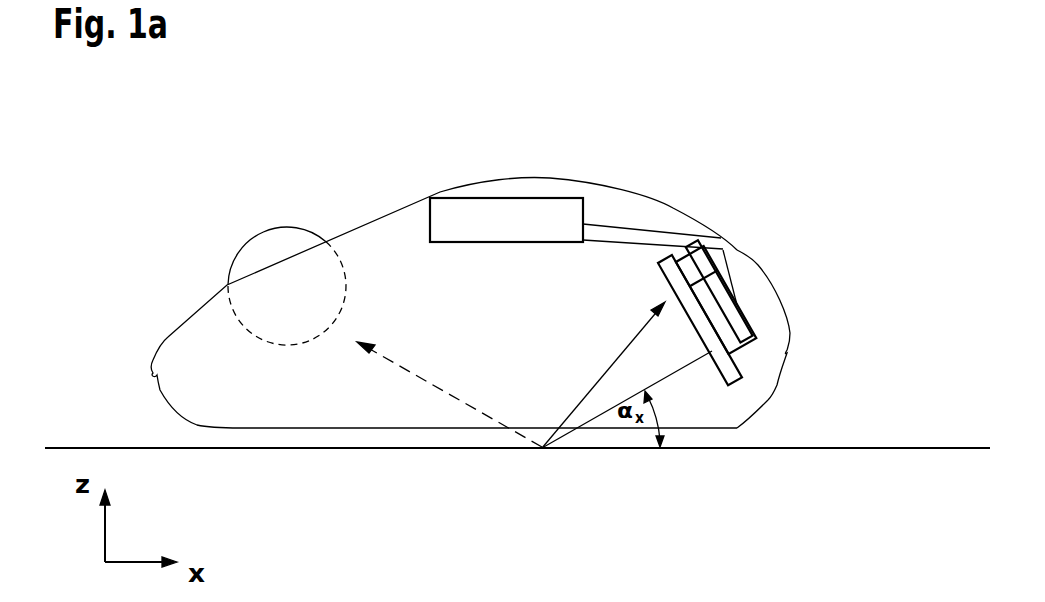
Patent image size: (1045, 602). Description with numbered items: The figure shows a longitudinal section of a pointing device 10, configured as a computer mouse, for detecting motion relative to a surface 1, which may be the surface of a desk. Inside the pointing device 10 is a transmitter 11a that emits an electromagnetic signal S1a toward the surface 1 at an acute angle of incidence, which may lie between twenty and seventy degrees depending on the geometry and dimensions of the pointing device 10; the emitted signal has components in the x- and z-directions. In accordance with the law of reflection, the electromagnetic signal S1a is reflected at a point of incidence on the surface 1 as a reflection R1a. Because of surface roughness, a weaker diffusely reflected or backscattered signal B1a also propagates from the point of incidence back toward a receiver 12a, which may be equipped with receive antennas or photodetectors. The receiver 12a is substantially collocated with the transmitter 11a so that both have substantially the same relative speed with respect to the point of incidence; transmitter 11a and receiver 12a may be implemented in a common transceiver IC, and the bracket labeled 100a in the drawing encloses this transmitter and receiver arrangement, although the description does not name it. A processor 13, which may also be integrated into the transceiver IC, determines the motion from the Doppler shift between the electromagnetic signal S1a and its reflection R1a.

The pointing device 10 is at (814, 100).
The surface 1 is at (83, 448).
The processor 13 is at (508, 198).
The receiver 12a is at (715, 256).
The rear vehicle section with transceiver arrangement 100a is at (803, 247).
The transmitter 11a is at (770, 400).
The reflection R1a is at (475, 410).
The backscattered signal B1a is at (588, 400).
The electromagnetic signal S1a is at (680, 400).